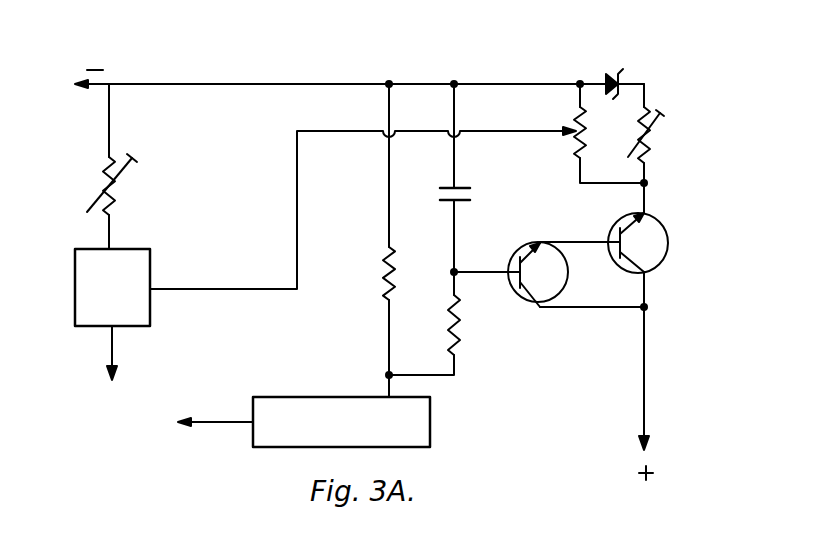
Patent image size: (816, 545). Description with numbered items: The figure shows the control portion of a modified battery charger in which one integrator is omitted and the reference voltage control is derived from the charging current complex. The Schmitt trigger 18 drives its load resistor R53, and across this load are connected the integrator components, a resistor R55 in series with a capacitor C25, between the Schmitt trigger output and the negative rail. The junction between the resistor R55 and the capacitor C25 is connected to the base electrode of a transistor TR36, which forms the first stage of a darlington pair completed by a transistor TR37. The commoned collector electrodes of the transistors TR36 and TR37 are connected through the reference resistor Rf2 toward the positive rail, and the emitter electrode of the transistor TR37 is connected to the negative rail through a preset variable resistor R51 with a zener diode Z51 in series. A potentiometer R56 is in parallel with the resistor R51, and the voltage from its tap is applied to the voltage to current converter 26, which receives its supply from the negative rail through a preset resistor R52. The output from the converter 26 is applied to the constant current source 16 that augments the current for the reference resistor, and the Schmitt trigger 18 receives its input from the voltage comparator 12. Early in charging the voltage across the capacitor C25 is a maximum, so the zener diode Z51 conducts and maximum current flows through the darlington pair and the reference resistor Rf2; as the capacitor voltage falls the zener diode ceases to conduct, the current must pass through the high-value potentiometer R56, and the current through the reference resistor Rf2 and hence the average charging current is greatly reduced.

The preset resistor R52 is at (126, 184).
The voltage to current converter 26 is at (85, 316).
The constant current source 16 is at (109, 366).
The voltage comparator 12 is at (198, 423).
The Schmitt trigger 18 is at (272, 432).
The resistor R53 is at (358, 273).
The resistor R55 is at (430, 325).
The capacitor C25 is at (472, 184).
The potentiometer R56 is at (552, 133).
The zener diode Z51 is at (612, 72).
The preset variable resistor R51 is at (650, 150).
The transistor TR36 is at (530, 303).
The transistor TR37 is at (653, 258).
The reference resistor Rf2 is at (664, 361).